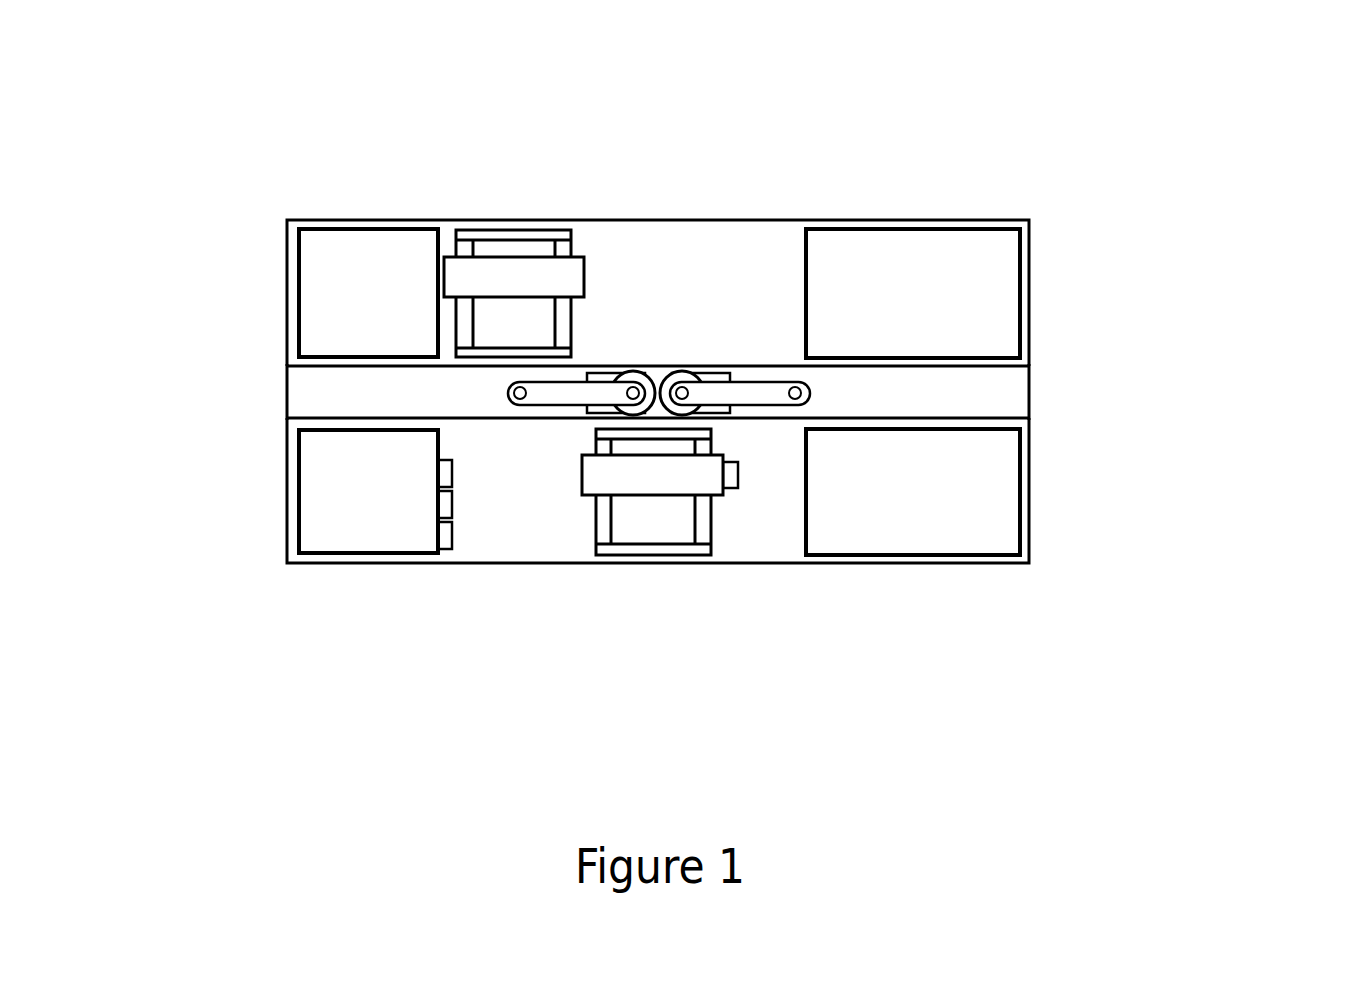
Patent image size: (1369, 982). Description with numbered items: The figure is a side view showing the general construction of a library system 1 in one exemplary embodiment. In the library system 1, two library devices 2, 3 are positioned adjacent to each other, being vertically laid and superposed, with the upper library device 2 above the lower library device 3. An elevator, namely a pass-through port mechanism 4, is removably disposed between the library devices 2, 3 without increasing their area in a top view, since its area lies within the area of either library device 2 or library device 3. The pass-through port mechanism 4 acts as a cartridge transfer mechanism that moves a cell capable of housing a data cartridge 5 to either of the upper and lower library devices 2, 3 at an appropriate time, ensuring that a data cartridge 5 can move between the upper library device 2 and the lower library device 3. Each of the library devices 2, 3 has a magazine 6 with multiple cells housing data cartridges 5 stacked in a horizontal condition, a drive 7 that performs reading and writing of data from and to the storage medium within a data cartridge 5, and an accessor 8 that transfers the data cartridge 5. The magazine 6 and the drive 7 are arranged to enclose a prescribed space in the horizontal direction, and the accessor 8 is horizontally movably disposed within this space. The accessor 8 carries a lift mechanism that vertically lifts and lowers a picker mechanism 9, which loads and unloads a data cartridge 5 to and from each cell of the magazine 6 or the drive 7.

The library system 1 is at (276, 203).
The library device 2 is at (1038, 227).
The library device 3 is at (1038, 425).
The pass-through port mechanism 4 is at (1038, 367).
The data cartridge 5 is at (443, 472).
The magazine 6 is at (310, 289).
The drive 7 is at (982, 242).
The accessor 8 is at (563, 318).
The picker mechanism 9 is at (577, 272).